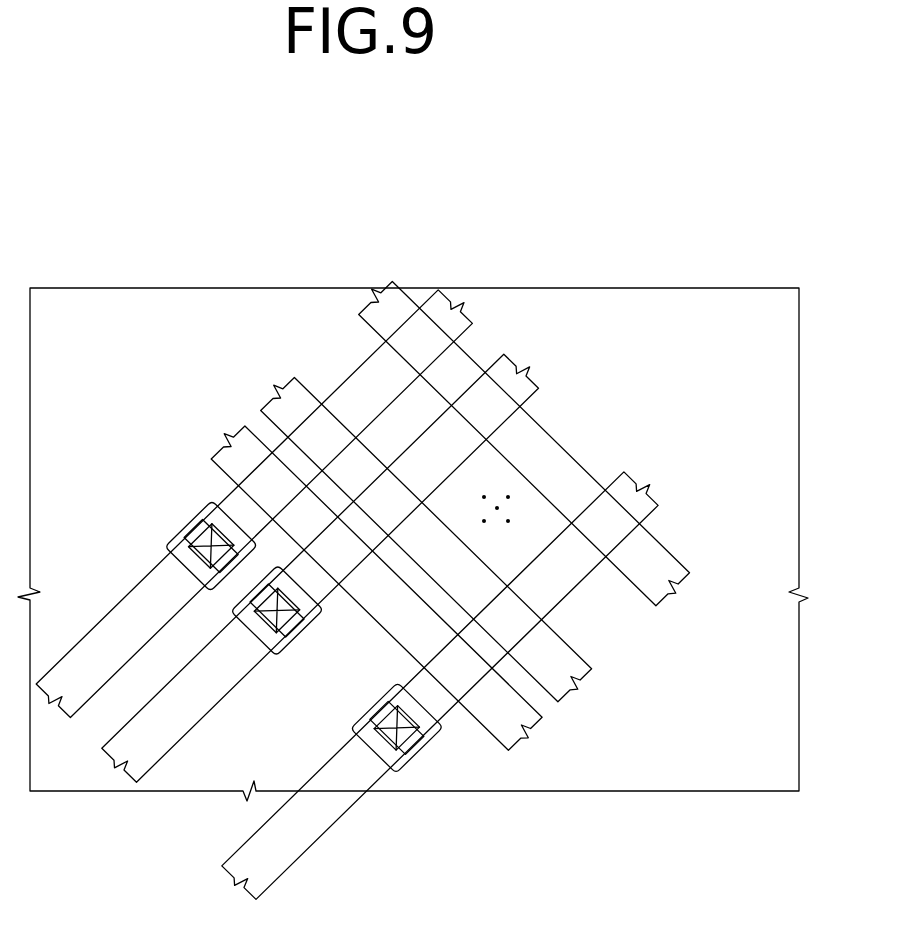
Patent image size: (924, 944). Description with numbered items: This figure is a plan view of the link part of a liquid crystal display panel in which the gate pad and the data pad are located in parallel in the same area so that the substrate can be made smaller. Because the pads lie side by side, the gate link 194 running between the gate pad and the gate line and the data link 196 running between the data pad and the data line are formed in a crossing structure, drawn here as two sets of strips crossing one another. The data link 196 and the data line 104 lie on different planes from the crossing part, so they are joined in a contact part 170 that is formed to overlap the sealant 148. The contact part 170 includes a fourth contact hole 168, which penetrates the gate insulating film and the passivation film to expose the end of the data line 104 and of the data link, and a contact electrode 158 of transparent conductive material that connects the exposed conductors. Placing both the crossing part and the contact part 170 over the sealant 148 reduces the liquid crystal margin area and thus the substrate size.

The data line 104 is at (655, 501).
The sealant 148 is at (800, 449).
The contact electrode 158 is at (430, 727).
The fourth contact hole 168 is at (415, 743).
The contact part 170 is at (502, 789).
The gate link 194 is at (672, 558).
The data link 196 is at (384, 595).